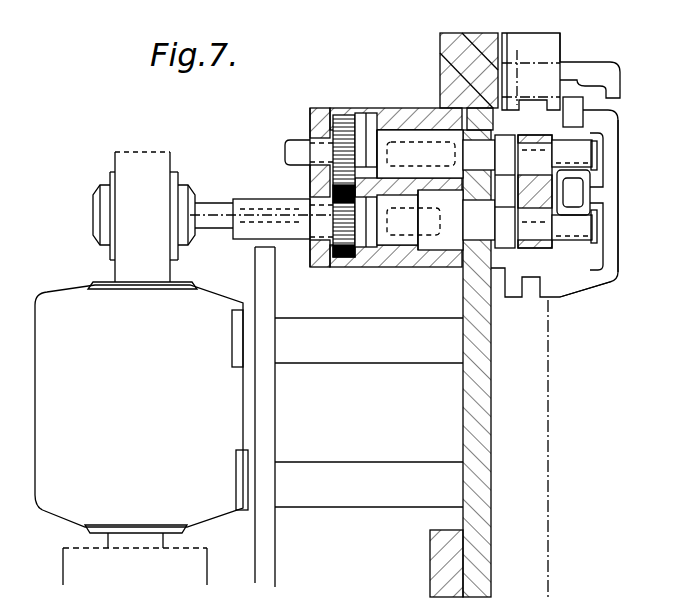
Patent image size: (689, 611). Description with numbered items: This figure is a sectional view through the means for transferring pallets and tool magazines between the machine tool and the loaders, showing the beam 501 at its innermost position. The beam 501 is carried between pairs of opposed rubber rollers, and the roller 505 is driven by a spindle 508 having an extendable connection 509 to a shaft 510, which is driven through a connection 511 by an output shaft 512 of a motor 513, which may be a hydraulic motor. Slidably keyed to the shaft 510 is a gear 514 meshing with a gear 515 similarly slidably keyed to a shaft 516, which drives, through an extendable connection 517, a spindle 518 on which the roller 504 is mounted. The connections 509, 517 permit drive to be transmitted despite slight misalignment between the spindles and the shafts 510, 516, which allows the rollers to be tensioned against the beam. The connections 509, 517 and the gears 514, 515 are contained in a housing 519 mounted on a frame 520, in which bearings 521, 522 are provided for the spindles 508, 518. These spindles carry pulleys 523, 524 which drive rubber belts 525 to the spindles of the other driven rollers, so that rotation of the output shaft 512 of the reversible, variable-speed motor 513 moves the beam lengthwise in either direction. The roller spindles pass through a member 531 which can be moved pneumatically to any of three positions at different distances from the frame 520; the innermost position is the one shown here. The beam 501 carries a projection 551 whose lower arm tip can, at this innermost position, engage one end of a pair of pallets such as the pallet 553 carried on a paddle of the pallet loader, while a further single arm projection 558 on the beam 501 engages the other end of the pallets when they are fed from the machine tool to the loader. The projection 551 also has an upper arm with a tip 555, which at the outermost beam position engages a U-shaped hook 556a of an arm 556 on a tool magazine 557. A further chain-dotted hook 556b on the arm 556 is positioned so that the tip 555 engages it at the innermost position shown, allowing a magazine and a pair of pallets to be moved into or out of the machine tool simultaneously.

The beam 501 is at (593, 283).
The roller 504 is at (580, 152).
The roller 505 is at (571, 228).
The spindle 508 is at (480, 250).
The extendable connection 509 is at (403, 252).
The shaft 510 is at (320, 242).
The connection 511 is at (247, 199).
The output shaft 512 is at (222, 223).
The motor 513 is at (68, 303).
The gear 514 is at (343, 262).
The gear 515 is at (343, 114).
The shaft 516 is at (366, 128).
The extendable connection 517 is at (384, 133).
The spindle 518 is at (443, 87).
The housing 519 is at (310, 116).
The frame 520 is at (473, 373).
The bearing 521 is at (470, 268).
The bearing 522 is at (460, 126).
The pulley 523 is at (512, 240).
The pulley 524 is at (507, 157).
The rubber belt 525 is at (507, 247).
The member 531 is at (447, 62).
The projection 551 is at (610, 167).
The pallet 553 is at (537, 432).
The tip 555 is at (579, 129).
The arm 556 is at (581, 68).
The U-shaped hook 556a is at (543, 73).
The U-shaped hook 556b is at (567, 52).
The tool magazine 557 is at (562, 61).
The single arm projection 558 is at (600, 330).